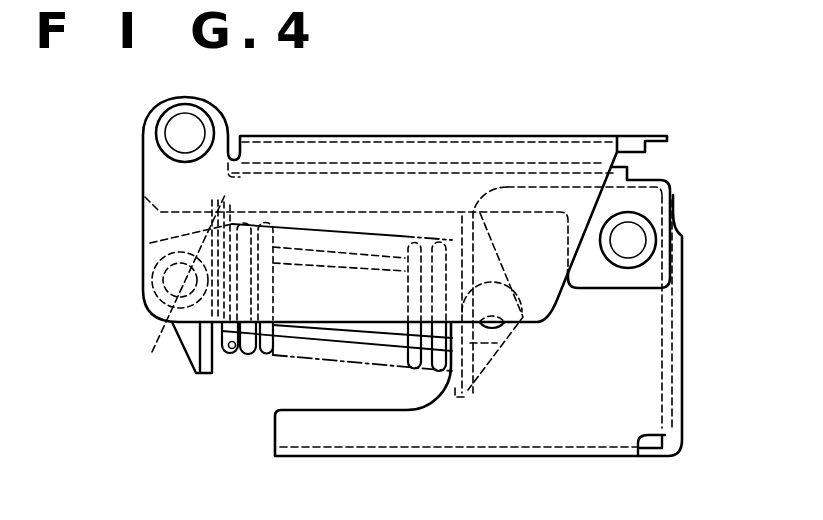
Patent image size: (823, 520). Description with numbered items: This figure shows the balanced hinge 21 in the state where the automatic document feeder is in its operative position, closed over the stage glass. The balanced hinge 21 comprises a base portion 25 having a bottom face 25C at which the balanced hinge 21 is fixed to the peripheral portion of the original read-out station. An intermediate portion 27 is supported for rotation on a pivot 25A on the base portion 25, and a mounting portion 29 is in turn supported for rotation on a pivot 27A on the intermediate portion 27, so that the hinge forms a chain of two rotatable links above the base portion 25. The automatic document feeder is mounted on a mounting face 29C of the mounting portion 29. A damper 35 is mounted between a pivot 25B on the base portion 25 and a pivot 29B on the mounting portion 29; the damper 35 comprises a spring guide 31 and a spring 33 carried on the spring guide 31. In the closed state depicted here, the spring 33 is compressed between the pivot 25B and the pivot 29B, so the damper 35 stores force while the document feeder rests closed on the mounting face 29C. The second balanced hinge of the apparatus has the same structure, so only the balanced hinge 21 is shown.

The balanced hinge 21 is at (457, 104).
The base portion 25 is at (652, 378).
The pivot 25A is at (638, 235).
The pivot 25B is at (503, 330).
The bottom face 25C is at (618, 457).
The intermediate portion 27 is at (670, 185).
The pivot 27A is at (197, 129).
The mounting portion 29 is at (582, 157).
The pivot 29B is at (178, 338).
The mounting face 29C is at (503, 134).
The spring guide 31 is at (400, 328).
The spring 33 is at (260, 350).
The damper 35 is at (309, 361).